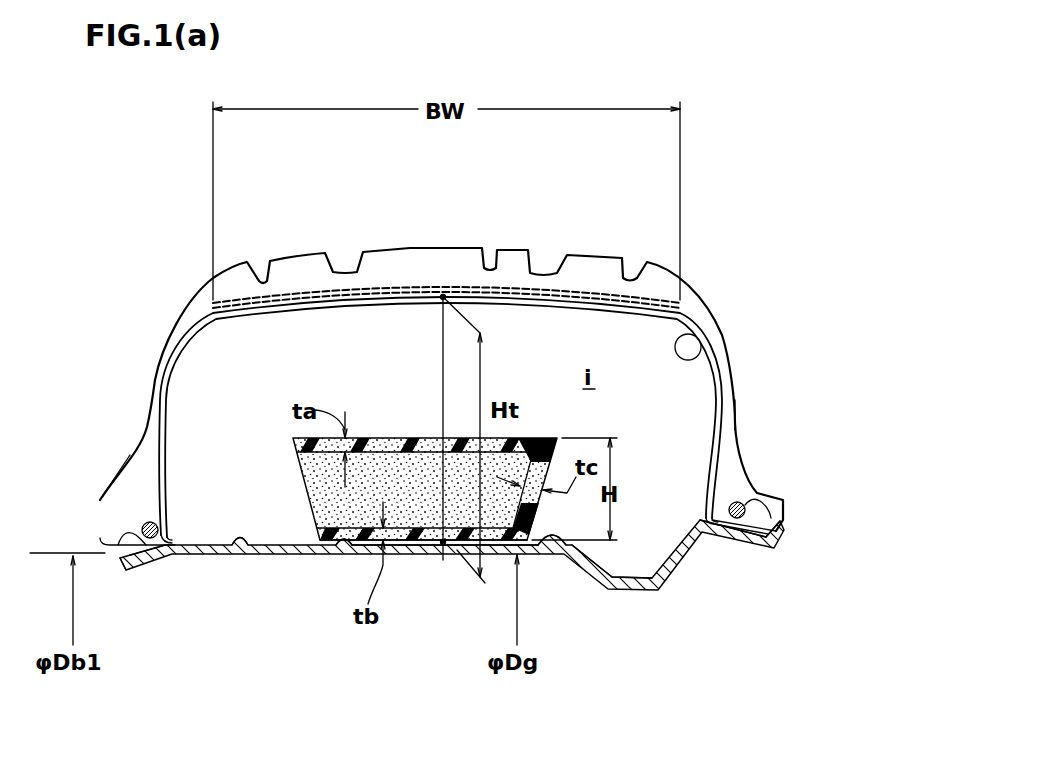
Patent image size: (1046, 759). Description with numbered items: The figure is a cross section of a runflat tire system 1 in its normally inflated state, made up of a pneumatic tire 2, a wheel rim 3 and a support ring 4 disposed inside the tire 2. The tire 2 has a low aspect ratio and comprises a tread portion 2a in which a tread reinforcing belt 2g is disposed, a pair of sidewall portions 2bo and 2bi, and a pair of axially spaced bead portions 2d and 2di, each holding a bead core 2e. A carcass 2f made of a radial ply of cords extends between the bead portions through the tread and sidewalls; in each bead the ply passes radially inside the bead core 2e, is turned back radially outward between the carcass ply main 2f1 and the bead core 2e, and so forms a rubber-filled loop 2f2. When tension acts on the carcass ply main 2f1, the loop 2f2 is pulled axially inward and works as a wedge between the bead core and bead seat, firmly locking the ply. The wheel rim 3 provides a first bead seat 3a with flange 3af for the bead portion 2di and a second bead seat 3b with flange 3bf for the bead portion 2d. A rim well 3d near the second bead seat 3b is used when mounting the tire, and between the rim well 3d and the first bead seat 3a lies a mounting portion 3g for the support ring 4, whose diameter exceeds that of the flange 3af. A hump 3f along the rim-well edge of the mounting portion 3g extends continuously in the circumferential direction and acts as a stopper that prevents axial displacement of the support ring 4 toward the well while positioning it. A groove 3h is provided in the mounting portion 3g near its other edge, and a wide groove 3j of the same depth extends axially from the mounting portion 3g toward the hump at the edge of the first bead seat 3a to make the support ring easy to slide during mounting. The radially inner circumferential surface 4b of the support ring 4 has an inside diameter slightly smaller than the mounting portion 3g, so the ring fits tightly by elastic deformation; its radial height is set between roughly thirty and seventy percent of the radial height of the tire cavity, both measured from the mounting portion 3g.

The runflat tire system 1 is at (798, 227).
The pneumatic tire 2 is at (728, 308).
The tread portion 2a is at (457, 258).
The tread reinforcing belt 2g is at (597, 287).
The carcass 2f is at (690, 345).
The sidewall portion 2bo is at (740, 384).
The sidewall portion 2bi is at (145, 381).
The carcass ply main 2f1 is at (727, 430).
The bead portion 2di is at (97, 485).
The bead core 2e is at (147, 528).
The bead portion 2d is at (790, 507).
The loop 2f2 is at (100, 543).
The wheel rim 3 is at (627, 588).
The first bead seat 3a is at (145, 560).
The flange 3af is at (122, 566).
The wide groove 3j is at (245, 545).
The groove 3h is at (325, 548).
The mounting portion 3g is at (392, 547).
The rim well 3d is at (618, 562).
The hump 3f is at (585, 558).
The second bead seat 3b is at (740, 545).
The flange 3bf is at (768, 540).
The support ring 4 is at (388, 428).
The radially inner circumferential surface 4b is at (427, 545).